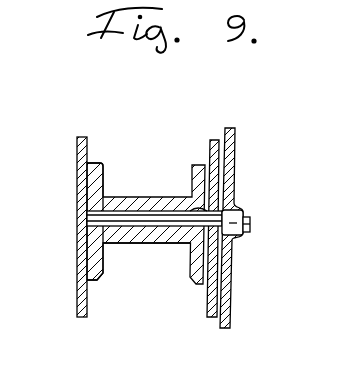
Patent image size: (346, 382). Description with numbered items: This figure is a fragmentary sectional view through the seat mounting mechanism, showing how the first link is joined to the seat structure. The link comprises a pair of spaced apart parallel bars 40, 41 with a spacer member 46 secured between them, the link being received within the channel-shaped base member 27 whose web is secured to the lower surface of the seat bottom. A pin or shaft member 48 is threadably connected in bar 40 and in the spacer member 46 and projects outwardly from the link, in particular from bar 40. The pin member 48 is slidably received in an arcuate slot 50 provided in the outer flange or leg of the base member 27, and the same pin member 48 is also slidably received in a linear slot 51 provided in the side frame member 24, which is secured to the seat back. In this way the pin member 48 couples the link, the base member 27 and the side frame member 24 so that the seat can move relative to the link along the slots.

The side frame member 24 is at (236, 152).
The base member 27 is at (208, 305).
The bar 40 is at (146, 212).
The bar 41 is at (105, 176).
The spacer member 46 is at (128, 243).
The pin or shaft member 48 is at (252, 223).
The arcuate slot 50 is at (177, 208).
The linear slot 51 is at (246, 213).